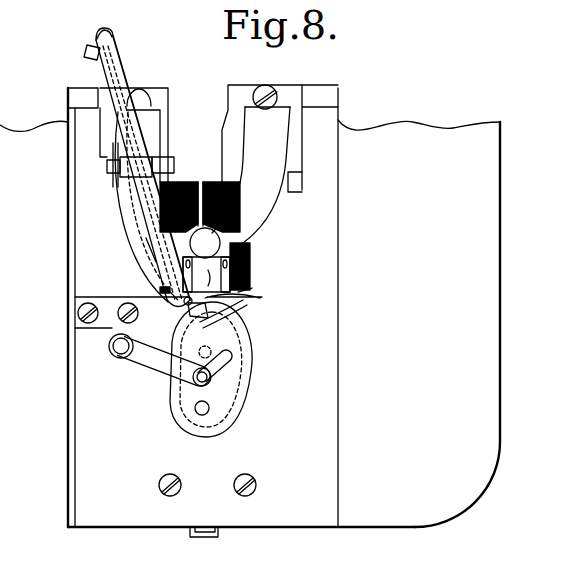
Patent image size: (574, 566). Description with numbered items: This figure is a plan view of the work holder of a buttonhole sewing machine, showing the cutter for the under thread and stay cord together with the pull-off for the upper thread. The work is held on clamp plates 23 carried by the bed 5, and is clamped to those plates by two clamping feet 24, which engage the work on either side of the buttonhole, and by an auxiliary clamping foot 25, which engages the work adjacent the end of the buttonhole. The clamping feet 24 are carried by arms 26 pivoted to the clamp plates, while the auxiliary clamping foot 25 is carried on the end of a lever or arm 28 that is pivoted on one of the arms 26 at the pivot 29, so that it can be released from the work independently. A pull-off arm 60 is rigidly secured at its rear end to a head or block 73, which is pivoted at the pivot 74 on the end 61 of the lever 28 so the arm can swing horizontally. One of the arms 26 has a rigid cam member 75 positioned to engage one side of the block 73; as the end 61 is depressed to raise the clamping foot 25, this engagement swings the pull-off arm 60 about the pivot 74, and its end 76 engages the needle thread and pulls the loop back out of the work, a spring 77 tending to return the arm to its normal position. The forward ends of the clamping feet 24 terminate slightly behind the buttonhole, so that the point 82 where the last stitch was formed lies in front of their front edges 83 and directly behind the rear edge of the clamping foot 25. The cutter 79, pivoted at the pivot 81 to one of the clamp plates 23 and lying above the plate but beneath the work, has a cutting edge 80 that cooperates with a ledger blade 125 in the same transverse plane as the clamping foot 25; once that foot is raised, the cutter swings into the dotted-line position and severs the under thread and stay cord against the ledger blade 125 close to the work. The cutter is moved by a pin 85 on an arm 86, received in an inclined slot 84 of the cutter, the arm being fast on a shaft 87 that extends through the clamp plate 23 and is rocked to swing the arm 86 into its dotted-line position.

The bed 5 is at (495, 367).
The clamp plates 23 is at (78, 463).
The clamping feet 24 is at (188, 259).
The auxiliary clamping foot 25 is at (187, 311).
The arms 26 is at (270, 203).
The lever or arm 28 is at (162, 184).
The pivot 29 is at (106, 167).
The pull-off arm 60 is at (150, 250).
The end of the lever 61 is at (97, 36).
The head or block 73 is at (92, 52).
The pivot 74 is at (110, 57).
The cam member 75 is at (98, 87).
The end of the pull-off arm 76 is at (188, 298).
The spring 77 is at (112, 151).
The cutter 79 is at (238, 342).
The cutting edge 80 is at (233, 298).
The pivot 81 is at (197, 413).
The point 82 is at (206, 237).
The front edges 83 is at (245, 289).
The inclined slot 84 is at (233, 378).
The pin 85 is at (198, 377).
The arm 86 is at (157, 364).
The shaft 87 is at (123, 350).
The ledger blade 125 is at (195, 323).